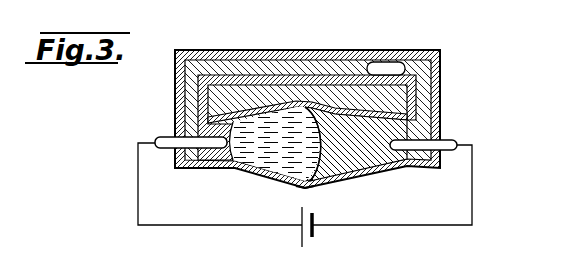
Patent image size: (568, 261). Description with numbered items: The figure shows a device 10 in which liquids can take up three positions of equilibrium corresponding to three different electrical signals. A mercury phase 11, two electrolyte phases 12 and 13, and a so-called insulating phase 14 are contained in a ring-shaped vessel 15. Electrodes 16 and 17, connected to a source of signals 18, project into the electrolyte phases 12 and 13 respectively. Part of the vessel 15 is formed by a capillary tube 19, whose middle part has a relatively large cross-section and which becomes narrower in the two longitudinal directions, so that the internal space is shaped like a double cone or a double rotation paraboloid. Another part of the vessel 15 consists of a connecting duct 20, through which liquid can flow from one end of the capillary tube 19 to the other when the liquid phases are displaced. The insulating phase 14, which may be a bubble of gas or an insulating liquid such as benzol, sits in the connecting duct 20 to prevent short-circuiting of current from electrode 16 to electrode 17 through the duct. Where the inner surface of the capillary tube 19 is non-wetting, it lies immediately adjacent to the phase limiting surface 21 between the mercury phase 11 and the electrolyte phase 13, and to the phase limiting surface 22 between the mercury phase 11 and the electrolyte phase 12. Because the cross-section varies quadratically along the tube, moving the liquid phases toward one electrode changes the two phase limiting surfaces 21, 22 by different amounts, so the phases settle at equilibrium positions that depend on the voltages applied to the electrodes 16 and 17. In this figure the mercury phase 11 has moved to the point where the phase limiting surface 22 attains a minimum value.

The cell assembly 10 is at (316, 105).
The mercury phase 11 is at (267, 153).
The electrolyte phase 12 is at (204, 165).
The electrolyte phase 13 is at (362, 158).
The insulating phase 14 is at (383, 65).
The ring-shaped vessel 15 is at (447, 64).
The electrode 16 is at (163, 135).
The electrode 17 is at (447, 140).
The source of signals 18 is at (312, 238).
The capillary tube 19 is at (318, 183).
The connecting duct 20 is at (252, 52).
The phase limiting surface 21 is at (330, 121).
The phase limiting surface 22 is at (224, 121).